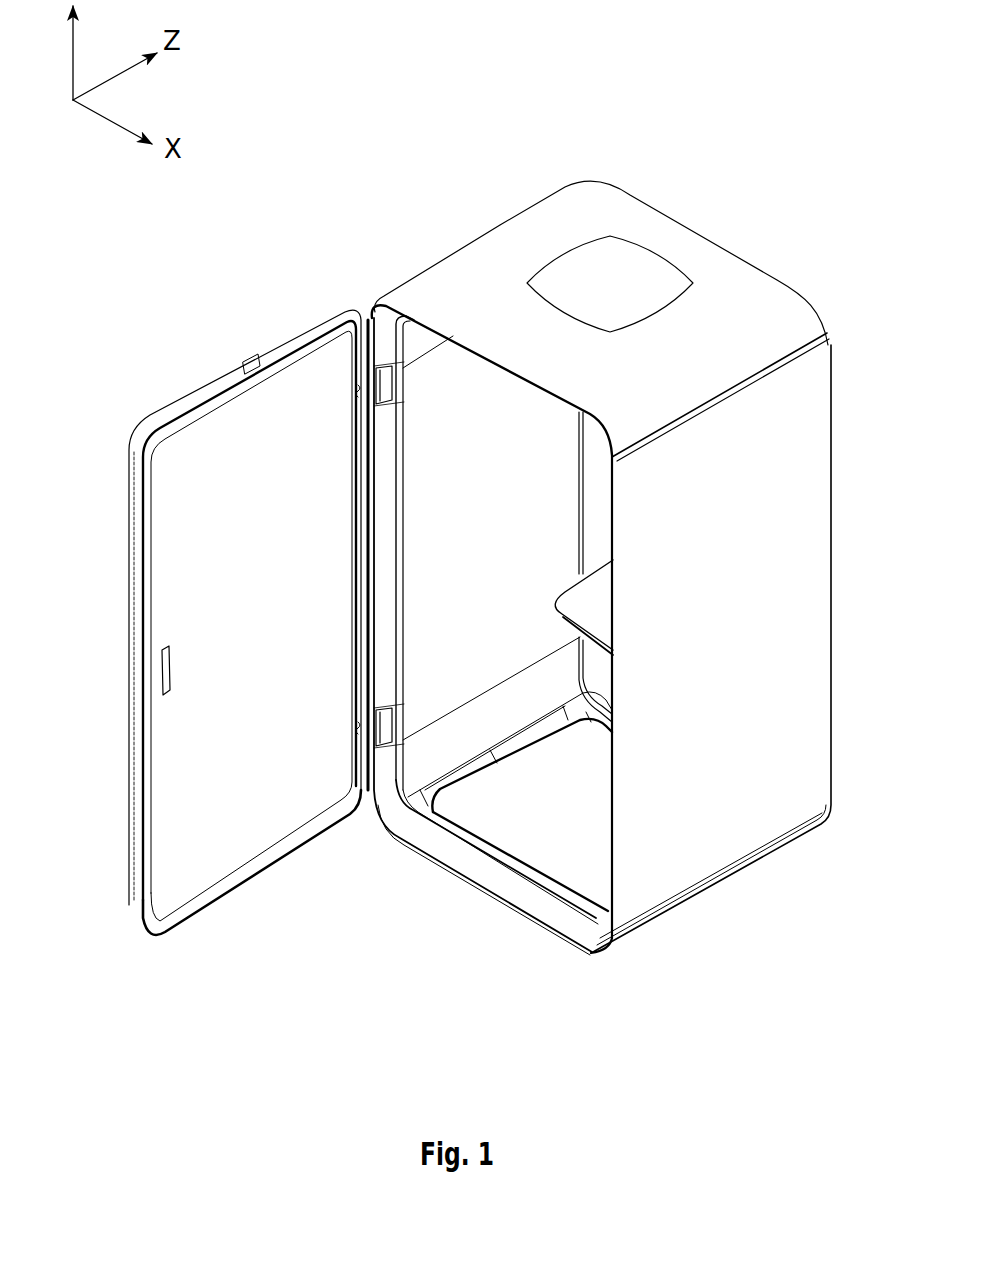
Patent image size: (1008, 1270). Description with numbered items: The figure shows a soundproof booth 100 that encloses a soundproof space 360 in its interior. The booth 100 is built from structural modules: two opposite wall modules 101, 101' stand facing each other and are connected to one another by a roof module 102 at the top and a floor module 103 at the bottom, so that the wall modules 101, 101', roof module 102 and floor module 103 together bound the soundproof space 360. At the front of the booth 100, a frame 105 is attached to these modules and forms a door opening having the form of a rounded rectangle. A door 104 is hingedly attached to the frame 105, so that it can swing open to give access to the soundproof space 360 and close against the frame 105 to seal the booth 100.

The soundproof booth 100 is at (420, 116).
The wall module 101 is at (649, 630).
The wall module 101' is at (507, 529).
The roof module 102 is at (737, 277).
The floor module 103 is at (561, 791).
The door 104 is at (128, 528).
The frame 105 is at (381, 669).
The soundproof space 360 is at (554, 517).